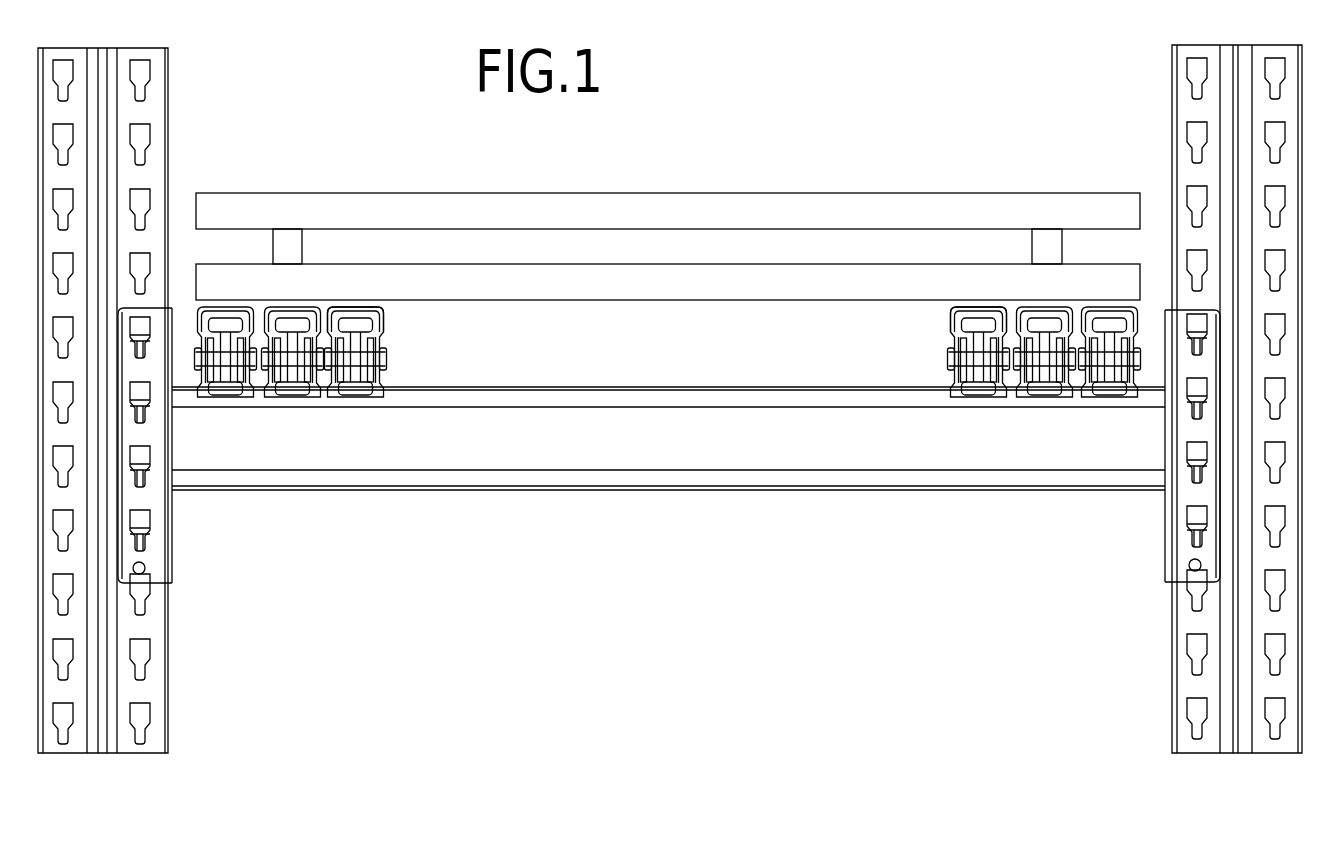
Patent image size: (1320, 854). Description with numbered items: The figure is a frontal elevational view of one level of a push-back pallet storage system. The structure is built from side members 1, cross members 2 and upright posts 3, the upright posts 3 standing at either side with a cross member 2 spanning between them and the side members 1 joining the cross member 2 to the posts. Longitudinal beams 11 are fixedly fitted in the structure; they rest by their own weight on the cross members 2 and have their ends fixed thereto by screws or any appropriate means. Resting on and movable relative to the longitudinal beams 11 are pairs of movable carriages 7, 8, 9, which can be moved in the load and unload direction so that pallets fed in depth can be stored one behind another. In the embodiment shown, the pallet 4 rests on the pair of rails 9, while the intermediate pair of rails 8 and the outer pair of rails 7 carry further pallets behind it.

The side member 1 is at (154, 535).
The cross member 2 is at (771, 440).
The upright post 3 is at (168, 70).
The pallet 4 is at (786, 188).
The movable carriage 7 is at (217, 318).
The movable carriage 8 is at (297, 320).
The movable carriage 9 is at (366, 320).
The longitudinal beam 11 is at (385, 325).